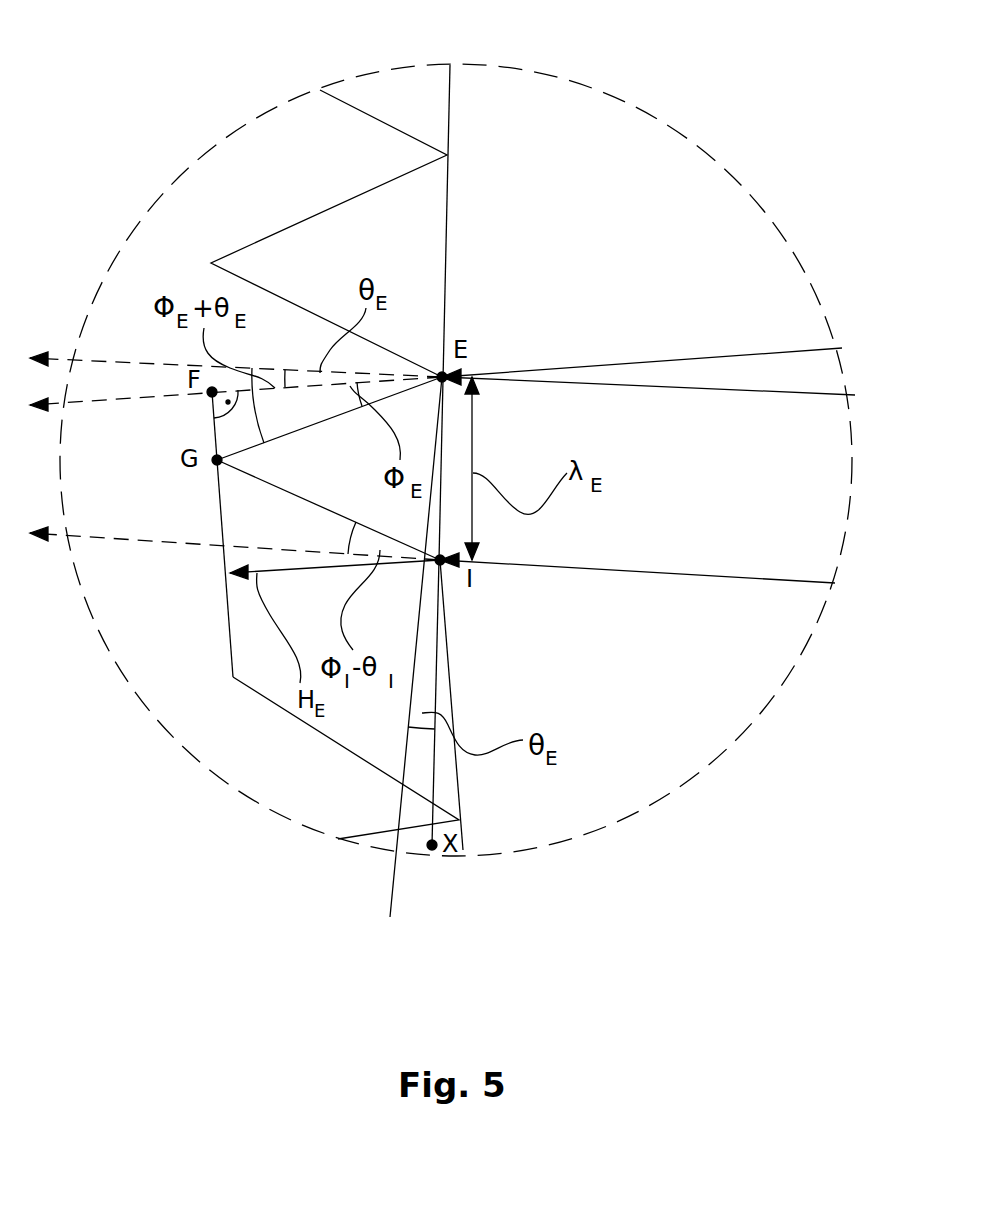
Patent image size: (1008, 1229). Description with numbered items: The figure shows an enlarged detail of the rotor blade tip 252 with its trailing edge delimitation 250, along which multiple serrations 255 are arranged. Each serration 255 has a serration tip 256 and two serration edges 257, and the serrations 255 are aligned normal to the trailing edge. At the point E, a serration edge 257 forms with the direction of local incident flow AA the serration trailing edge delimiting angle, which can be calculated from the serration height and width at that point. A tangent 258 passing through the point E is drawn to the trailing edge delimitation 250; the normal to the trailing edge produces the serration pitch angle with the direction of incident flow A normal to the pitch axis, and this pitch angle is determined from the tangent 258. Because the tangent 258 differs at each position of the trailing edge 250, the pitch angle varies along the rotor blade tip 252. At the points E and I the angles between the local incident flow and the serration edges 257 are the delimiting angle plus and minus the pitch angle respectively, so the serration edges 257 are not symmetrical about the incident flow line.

The trailing edge delimitation 250 is at (452, 198).
The rotor blade tip 252 is at (675, 187).
The serrations 255 is at (390, 743).
The serration tip 256 is at (211, 263).
The serration edges 257 is at (316, 422).
The tangent 258 is at (437, 660).
The direction of incident flow A is at (795, 393).
The direction of local incident flow AA is at (798, 352).